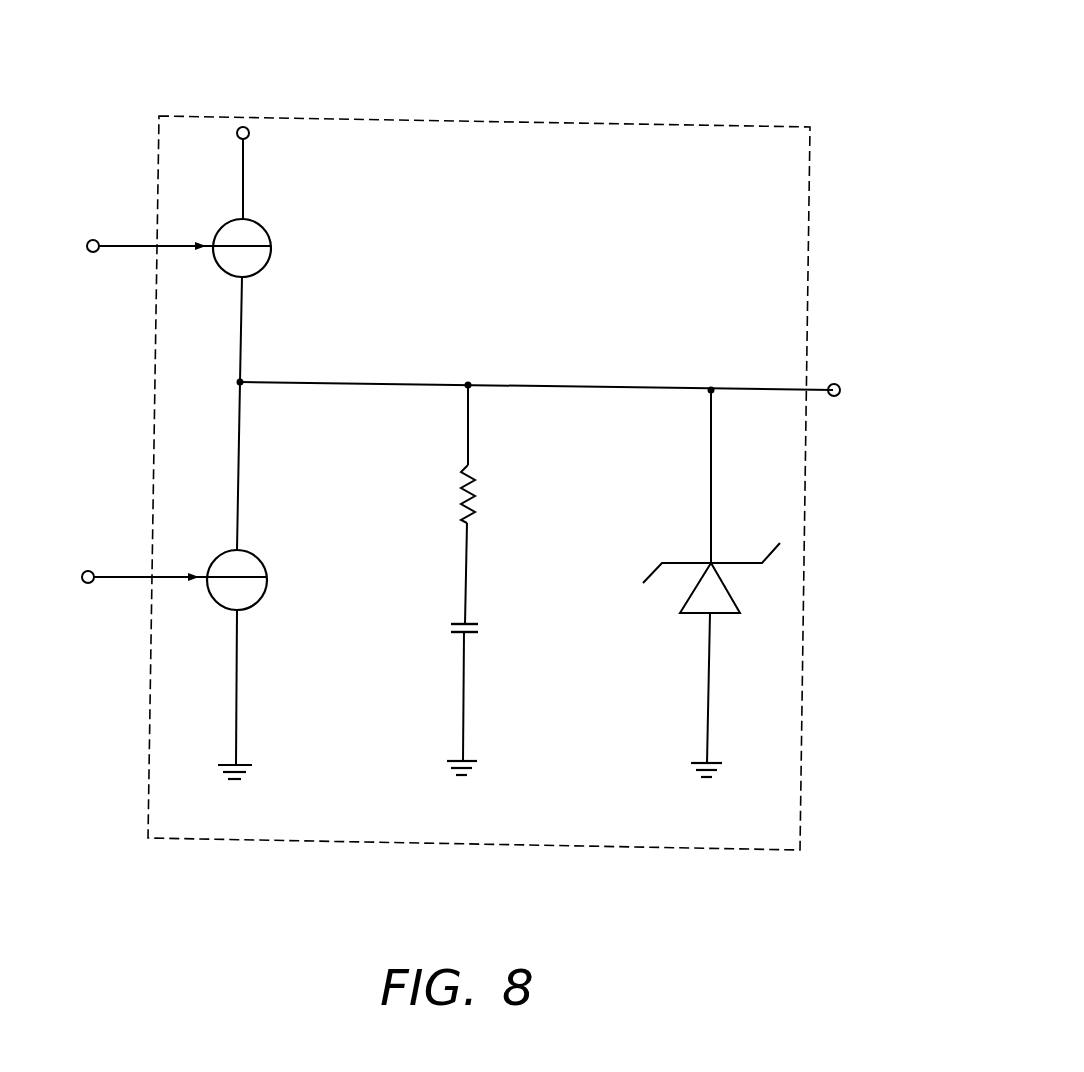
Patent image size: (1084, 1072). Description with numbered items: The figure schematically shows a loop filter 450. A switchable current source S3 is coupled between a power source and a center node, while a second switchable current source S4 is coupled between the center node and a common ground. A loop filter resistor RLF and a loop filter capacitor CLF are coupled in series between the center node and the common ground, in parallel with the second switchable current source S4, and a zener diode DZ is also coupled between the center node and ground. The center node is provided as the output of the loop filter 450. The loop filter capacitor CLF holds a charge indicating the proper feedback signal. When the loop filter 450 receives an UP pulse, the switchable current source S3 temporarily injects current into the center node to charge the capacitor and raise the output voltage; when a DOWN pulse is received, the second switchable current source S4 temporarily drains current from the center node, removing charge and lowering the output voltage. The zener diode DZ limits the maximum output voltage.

The loop filter 450 is at (393, 118).
The switchable current source S3 is at (203, 248).
The second switchable current source S4 is at (197, 562).
The loop filter resistor RLF is at (490, 494).
The loop filter capacitor CLF is at (485, 611).
The zener diode DZ is at (711, 571).